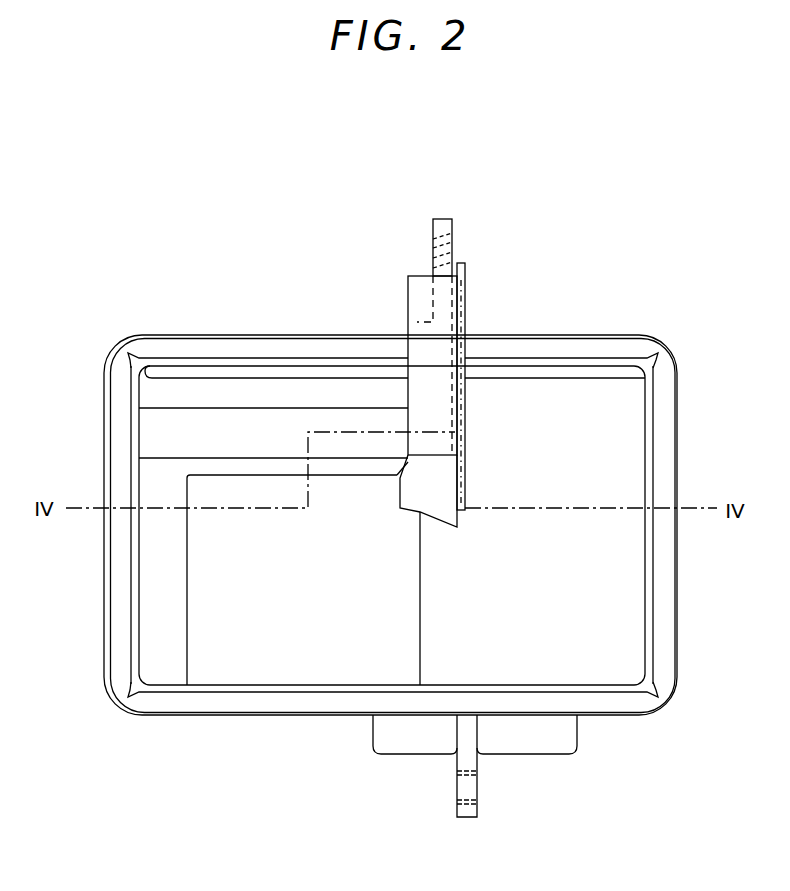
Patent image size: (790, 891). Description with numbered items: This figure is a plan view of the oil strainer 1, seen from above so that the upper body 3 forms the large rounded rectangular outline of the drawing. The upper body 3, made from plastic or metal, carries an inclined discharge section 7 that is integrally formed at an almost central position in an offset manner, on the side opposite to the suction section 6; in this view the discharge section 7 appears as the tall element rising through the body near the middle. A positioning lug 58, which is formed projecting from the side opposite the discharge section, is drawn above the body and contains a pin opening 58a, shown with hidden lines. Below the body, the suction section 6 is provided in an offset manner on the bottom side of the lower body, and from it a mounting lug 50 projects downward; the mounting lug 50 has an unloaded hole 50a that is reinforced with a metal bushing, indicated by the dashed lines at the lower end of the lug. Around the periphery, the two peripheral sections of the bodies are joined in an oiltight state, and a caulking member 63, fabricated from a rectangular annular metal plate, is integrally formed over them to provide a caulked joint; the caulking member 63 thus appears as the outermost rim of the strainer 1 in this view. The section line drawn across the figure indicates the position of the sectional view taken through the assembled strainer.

The oil strainer 1 is at (190, 257).
The upper body 3 is at (626, 438).
The suction section 6 is at (535, 758).
The discharge section 7 is at (464, 293).
The mounting lug 50 is at (467, 817).
The unloaded hole 50a is at (458, 797).
The positioning lug 58 is at (441, 219).
The pin opening 58a is at (432, 242).
The caulking member 63 is at (621, 338).